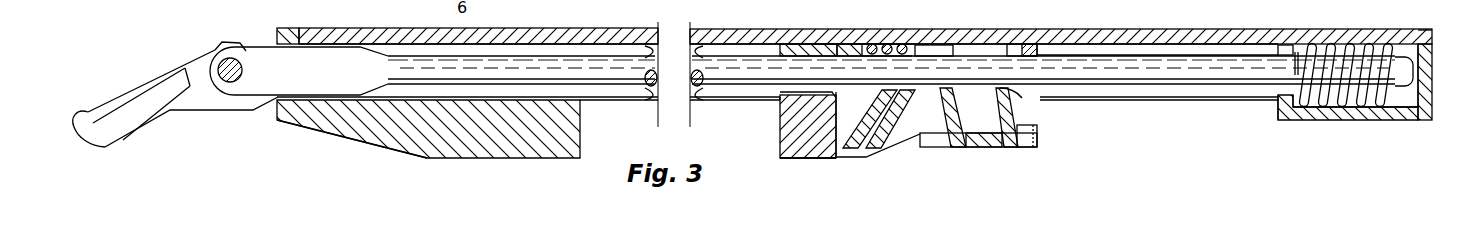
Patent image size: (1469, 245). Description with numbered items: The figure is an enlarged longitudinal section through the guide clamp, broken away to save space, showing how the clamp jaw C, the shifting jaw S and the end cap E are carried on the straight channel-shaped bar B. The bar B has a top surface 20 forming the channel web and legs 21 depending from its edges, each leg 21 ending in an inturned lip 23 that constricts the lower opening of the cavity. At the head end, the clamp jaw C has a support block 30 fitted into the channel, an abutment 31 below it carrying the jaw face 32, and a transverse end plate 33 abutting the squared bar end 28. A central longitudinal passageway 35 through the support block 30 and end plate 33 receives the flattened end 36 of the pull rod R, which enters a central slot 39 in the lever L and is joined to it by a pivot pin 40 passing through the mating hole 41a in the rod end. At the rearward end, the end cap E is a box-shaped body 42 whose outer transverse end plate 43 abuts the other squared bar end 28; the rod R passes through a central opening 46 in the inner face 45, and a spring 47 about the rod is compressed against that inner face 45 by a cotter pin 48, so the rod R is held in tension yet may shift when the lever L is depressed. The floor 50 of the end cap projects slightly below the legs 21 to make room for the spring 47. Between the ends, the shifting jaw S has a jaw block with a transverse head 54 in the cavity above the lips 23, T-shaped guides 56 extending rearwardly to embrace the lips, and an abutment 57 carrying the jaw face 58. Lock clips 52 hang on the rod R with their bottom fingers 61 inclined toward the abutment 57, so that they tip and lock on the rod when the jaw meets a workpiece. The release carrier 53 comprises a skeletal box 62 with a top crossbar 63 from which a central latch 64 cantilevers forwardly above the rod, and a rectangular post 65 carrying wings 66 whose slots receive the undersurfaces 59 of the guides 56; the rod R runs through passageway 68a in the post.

The lever L is at (120, 120).
The central longitudinal slot 39 is at (193, 62).
The pivot pin 40 is at (222, 52).
The mating hole 41a is at (243, 44).
The flattened end of the pull rod 36 is at (322, 82).
The transverse end plate 33 is at (292, 38).
The squared bar end 28 is at (316, 34).
The central longitudinal passageway 35 is at (470, 46).
The support block 30 is at (560, 47).
The jaw face 32 is at (568, 139).
The abutment 31 is at (417, 148).
The clamp jaw C is at (322, 140).
The pull rod R is at (1173, 76).
The cotter pin 48 is at (1410, 75).
The central latch 64 is at (813, 50).
The top crossbar 63 is at (857, 46).
The lock clips 52 is at (893, 44).
The skeletal box 62 is at (934, 44).
The passageway 68a is at (1017, 50).
The legs 21 is at (1110, 50).
The bar B is at (1157, 34).
The top surface 20 is at (1222, 34).
The central opening 46 is at (1289, 44).
The spring 47 is at (1336, 44).
The transverse end plate 43 is at (1438, 32).
The box-shaped body 42 is at (1410, 103).
The floor 50 is at (1330, 115).
The inner face 45 is at (1282, 112).
The end cap E is at (1360, 128).
The inturned lip 23 is at (1215, 97).
The jaw face 58 is at (782, 132).
The head 54 is at (774, 98).
The abutment 57 is at (772, 155).
The bottom finger 61 is at (876, 150).
The T-shaped guides 56 is at (917, 117).
The rectangular post 65 is at (967, 118).
The undersurface 59 is at (1017, 133).
The release carrier 53 is at (1020, 97).
The wings 66 is at (1038, 143).
The shifting jaw S is at (818, 180).